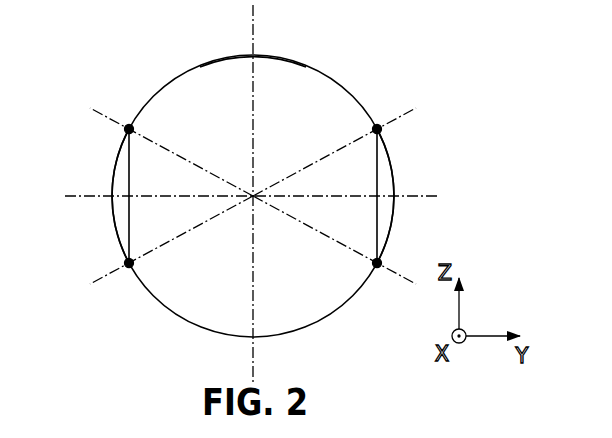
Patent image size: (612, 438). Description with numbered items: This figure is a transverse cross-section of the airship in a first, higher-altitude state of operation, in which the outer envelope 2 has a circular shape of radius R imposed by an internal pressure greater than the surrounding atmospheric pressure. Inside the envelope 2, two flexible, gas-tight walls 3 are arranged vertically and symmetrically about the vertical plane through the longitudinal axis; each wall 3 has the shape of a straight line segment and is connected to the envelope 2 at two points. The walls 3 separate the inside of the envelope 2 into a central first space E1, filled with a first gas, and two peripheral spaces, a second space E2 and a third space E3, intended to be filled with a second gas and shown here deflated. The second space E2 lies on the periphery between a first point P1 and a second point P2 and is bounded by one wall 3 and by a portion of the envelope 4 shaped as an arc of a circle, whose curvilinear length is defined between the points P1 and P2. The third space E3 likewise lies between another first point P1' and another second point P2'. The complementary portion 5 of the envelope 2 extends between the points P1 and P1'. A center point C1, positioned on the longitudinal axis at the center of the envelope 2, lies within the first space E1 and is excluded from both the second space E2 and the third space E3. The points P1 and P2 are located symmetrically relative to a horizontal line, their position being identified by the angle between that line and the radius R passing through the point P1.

The outer envelope 2 is at (293, 60).
The wall 3 is at (121, 239).
The portion of the envelope 4 is at (113, 180).
The complementary portion of the envelope 5 is at (215, 59).
The first space E1 is at (312, 100).
The second space E2 is at (119, 161).
The third space E3 is at (390, 155).
The first point P1 is at (123, 114).
The second point P2 is at (122, 283).
The another first point P1' is at (389, 114).
The another second point P2' is at (388, 283).
The center point C1 is at (253, 196).
The radius R is at (253, 196).